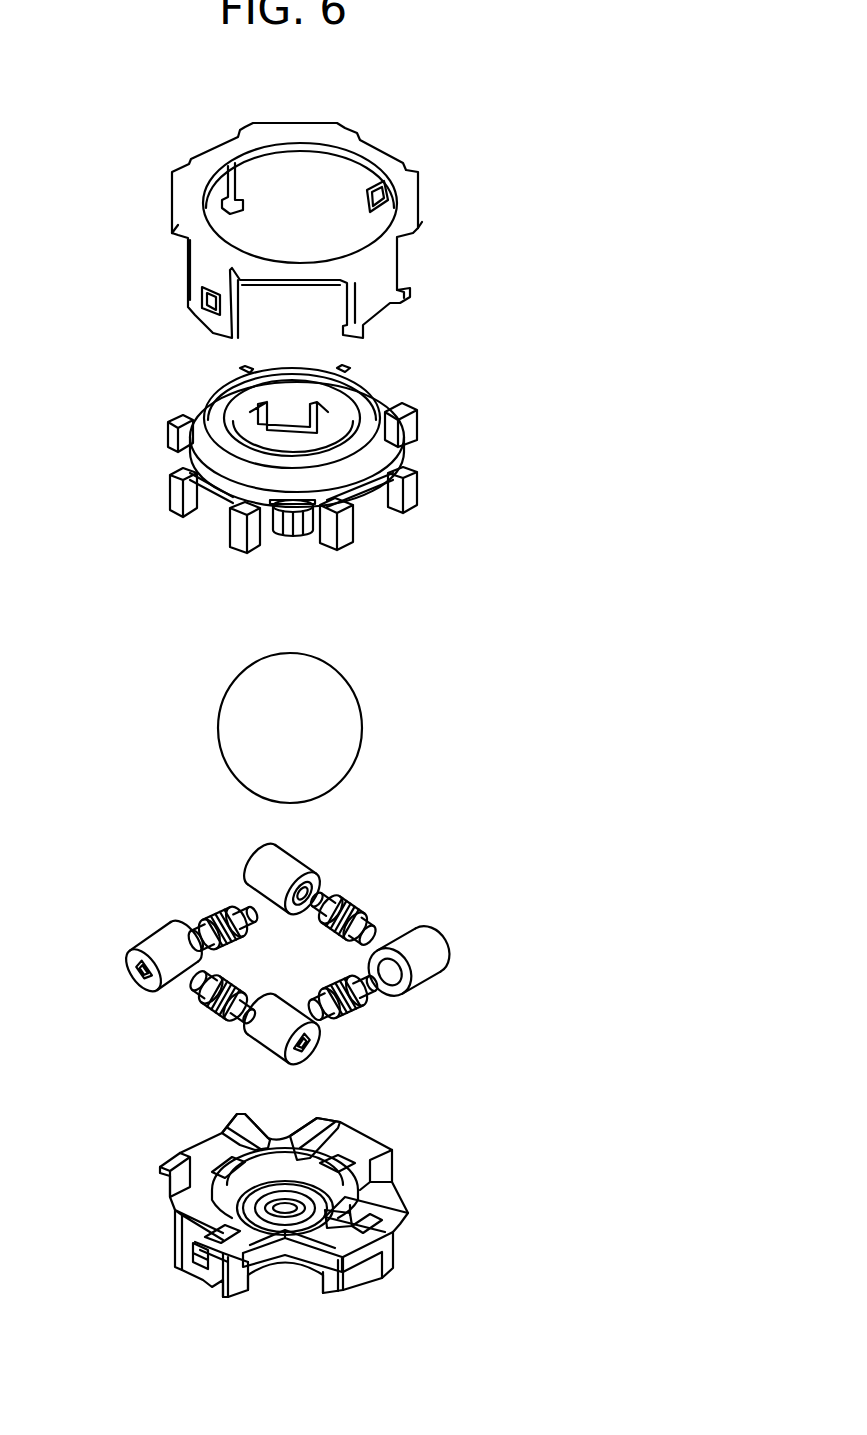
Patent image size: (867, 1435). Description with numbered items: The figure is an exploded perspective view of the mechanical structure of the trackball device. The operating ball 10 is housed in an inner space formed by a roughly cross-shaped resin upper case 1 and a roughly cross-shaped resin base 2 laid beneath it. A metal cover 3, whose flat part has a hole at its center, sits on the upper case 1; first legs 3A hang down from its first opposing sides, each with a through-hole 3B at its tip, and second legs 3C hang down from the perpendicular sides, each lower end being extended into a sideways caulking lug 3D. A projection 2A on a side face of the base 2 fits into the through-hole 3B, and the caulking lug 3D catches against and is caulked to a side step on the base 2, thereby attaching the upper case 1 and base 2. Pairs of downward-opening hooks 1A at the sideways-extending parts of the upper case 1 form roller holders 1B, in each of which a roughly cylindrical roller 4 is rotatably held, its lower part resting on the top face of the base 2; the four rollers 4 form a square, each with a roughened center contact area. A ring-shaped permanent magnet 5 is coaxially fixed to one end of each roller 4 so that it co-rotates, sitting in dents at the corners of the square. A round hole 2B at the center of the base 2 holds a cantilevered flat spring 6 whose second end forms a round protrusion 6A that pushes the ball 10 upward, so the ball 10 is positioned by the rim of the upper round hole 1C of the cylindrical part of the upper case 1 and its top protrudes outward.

The upper case 1 is at (322, 472).
The hook 1A is at (240, 390).
The roller holder 1B is at (270, 537).
The upper round hole 1C is at (330, 432).
The base 2 is at (297, 1213).
The projection 2A is at (203, 1253).
The round hole 2B is at (243, 1213).
The cover 3 is at (407, 193).
The first leg 3A is at (203, 262).
The through-hole 3B is at (203, 298).
The second leg 3C is at (392, 267).
The caulking lug 3D is at (413, 293).
The roller 4 is at (243, 907).
The permanent magnet 5 is at (290, 870).
The flat spring 6 is at (285, 1208).
The round protrusion 6A is at (287, 1210).
The operating ball 10 is at (352, 712).